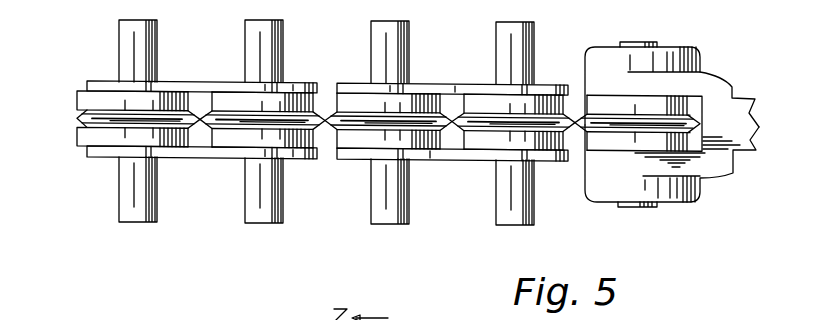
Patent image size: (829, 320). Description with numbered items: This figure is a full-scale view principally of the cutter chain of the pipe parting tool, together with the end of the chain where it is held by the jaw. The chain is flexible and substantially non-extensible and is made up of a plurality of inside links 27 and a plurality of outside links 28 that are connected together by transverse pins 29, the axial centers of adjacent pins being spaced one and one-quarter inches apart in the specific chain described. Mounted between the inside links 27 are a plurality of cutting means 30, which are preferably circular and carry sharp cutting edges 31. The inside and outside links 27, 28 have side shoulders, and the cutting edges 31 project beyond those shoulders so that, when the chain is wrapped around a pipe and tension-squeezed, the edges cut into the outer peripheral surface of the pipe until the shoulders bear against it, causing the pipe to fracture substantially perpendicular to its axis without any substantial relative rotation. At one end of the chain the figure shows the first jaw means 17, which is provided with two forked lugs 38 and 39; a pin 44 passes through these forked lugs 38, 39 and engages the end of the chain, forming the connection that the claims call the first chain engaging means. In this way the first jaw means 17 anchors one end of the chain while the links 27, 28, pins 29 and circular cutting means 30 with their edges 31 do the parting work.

The first jaw means 17 is at (692, 60).
The inside links 27 is at (326, 95).
The outside links 28 is at (196, 81).
The transverse pins 29 is at (147, 222).
The cutting means 30 is at (105, 121).
The cutting edges 31 is at (77, 118).
The forked lug 38 is at (602, 190).
The forked lug 39 is at (602, 55).
The pin 44 is at (640, 207).